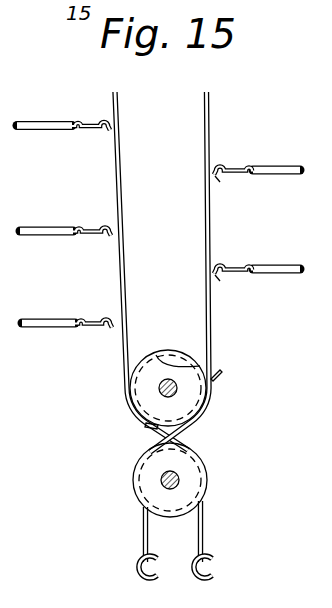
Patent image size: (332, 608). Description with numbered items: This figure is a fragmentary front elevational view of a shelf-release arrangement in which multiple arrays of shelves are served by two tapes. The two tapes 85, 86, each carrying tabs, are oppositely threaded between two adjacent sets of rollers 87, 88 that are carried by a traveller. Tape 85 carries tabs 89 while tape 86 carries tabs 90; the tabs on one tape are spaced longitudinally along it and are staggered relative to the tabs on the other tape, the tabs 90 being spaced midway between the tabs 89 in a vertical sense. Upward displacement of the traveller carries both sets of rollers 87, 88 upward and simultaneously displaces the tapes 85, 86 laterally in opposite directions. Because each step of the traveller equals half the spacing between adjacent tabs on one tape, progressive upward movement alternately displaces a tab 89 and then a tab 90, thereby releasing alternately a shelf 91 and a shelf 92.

The tape 85 is at (117, 262).
The tape 86 is at (213, 238).
The roller 87 is at (185, 468).
The roller 88 is at (174, 356).
The tab 89 is at (108, 128).
The tab 90 is at (217, 177).
The shelf 91 is at (41, 228).
The shelf 92 is at (293, 176).